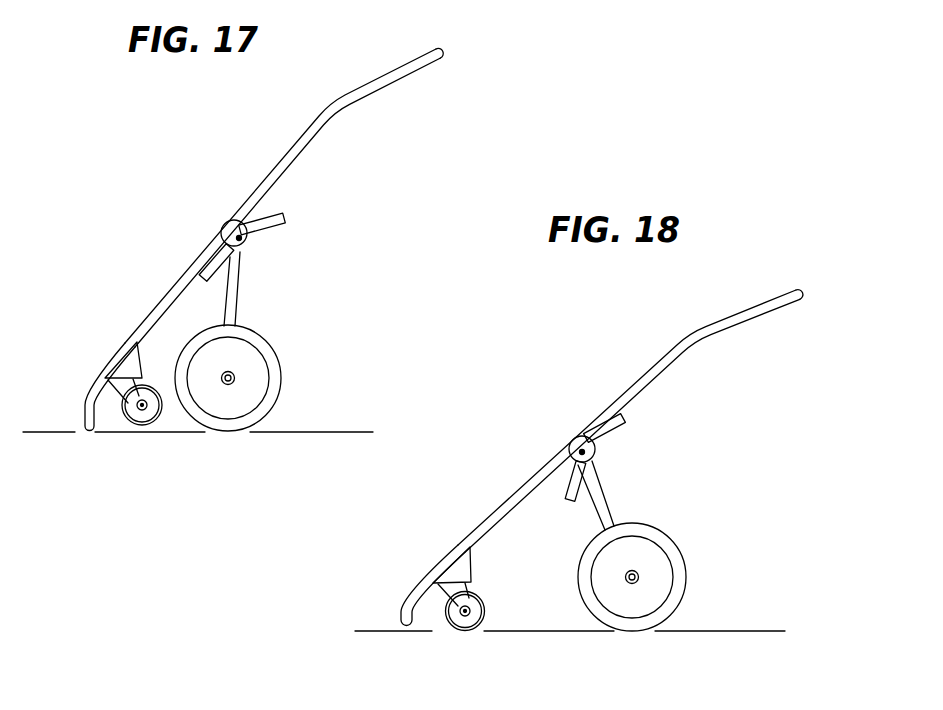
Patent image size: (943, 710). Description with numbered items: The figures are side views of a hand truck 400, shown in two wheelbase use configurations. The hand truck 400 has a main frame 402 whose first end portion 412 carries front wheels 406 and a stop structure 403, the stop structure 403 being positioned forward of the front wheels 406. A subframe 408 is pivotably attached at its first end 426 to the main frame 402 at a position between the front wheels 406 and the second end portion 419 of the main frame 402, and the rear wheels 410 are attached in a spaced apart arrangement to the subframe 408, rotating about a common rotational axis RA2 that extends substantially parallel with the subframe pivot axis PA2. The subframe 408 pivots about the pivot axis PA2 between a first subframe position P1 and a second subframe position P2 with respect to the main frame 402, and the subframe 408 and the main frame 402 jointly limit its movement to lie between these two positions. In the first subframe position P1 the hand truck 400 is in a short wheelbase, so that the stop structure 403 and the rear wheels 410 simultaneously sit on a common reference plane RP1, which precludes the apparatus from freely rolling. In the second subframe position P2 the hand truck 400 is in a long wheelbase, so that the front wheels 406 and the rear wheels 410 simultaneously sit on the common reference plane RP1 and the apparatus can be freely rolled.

In FIG. 17, the hand truck 400 is at (200, 183).
In FIG. 18, the hand truck 400 is at (561, 385).
In FIG. 17, the main frame 402 is at (308, 133).
In FIG. 18, the main frame 402 is at (670, 348).
In FIG. 17, the stop structure 403 is at (85, 418).
In FIG. 18, the stop structure 403 is at (405, 607).
In FIG. 17, the front wheels 406 is at (130, 415).
In FIG. 18, the front wheels 406 is at (463, 620).
In FIG. 17, the subframe 408 is at (237, 278).
In FIG. 18, the subframe 408 is at (604, 486).
In FIG. 17, the rear wheels 410 is at (283, 373).
In FIG. 18, the rear wheels 410 is at (688, 561).
In FIG. 17, the first end portion 412 is at (98, 383).
In FIG. 18, the first end portion 412 is at (430, 583).
In FIG. 17, the second end portion 419 is at (440, 51).
In FIG. 18, the second end portion 419 is at (804, 289).
In FIG. 17, the first end 426 is at (248, 253).
In FIG. 18, the first end 426 is at (593, 465).
In FIG. 17, the subframe pivot axis PA2 is at (235, 237).
In FIG. 18, the subframe pivot axis PA2 is at (578, 452).
In FIG. 17, the common rotational axis RA2 is at (231, 383).
In FIG. 18, the common rotational axis RA2 is at (638, 580).
In FIG. 17, the first subframe position P1 is at (277, 322).
In FIG. 18, the second subframe position P2 is at (693, 510).
In FIG. 17, the common reference plane RP1 is at (287, 434).